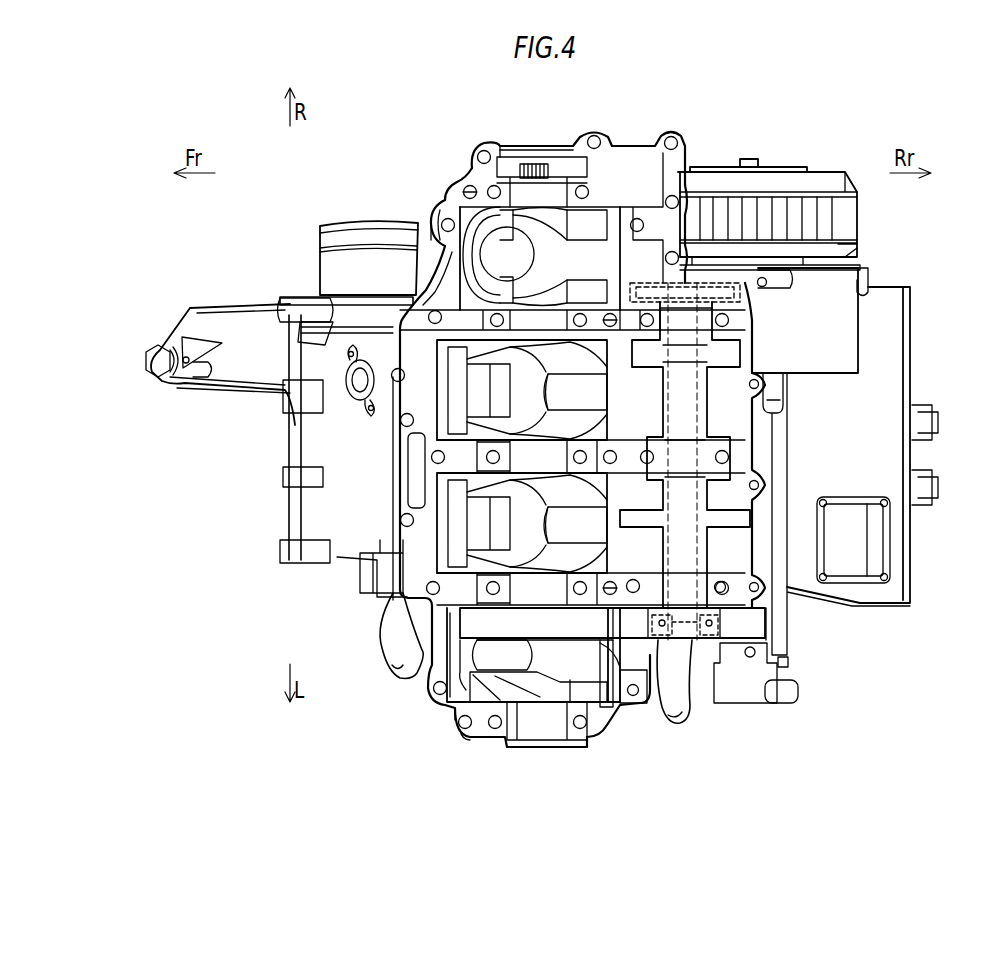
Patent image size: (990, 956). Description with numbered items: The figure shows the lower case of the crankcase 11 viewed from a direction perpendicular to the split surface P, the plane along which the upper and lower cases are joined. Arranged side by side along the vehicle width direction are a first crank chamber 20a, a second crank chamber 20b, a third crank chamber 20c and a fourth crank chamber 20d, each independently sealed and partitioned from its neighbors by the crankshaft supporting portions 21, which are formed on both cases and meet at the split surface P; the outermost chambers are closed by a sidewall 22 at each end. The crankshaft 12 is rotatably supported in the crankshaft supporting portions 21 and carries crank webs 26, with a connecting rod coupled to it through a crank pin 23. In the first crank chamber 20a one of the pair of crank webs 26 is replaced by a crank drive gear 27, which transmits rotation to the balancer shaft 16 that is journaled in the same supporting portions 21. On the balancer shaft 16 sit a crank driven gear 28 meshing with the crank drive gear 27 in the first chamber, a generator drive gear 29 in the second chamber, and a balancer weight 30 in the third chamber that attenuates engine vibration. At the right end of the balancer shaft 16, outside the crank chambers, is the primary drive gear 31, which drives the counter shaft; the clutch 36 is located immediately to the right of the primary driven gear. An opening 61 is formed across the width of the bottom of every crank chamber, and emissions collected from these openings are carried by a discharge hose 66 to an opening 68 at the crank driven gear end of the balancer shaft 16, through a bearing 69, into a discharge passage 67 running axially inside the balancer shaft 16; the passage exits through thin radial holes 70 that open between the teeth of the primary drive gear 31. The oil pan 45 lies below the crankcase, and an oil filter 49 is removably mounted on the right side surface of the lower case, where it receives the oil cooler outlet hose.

The crankcase 11 is at (642, 146).
The split surface P is at (604, 147).
The crankshaft 12 is at (515, 165).
The sidewall 22 is at (475, 182).
The holes 70 is at (668, 283).
The crank web 26 is at (585, 292).
The crank pin 23 is at (510, 266).
The balancer weight 30 is at (707, 358).
The primary drive gear 31 is at (765, 292).
The balancer shaft 16 is at (787, 403).
The discharge passage 67 is at (722, 460).
The generator drive gear 29 is at (750, 513).
The clutch 36 is at (858, 212).
The crank driven gear 28 is at (762, 623).
The opening 68 is at (682, 640).
The bearing 69 is at (760, 647).
The crank drive gear 27 is at (633, 697).
The discharge hose 66 is at (398, 657).
The oil filter 49 is at (340, 222).
The oil pan 45 is at (190, 330).
The crankshaft supporting portion 21 is at (400, 290).
The opening 61 is at (425, 270).
The first crank chamber 20a is at (465, 698).
The second crank chamber 20b is at (440, 550).
The third crank chamber 20c is at (415, 432).
The fourth crank chamber 20d is at (410, 250).